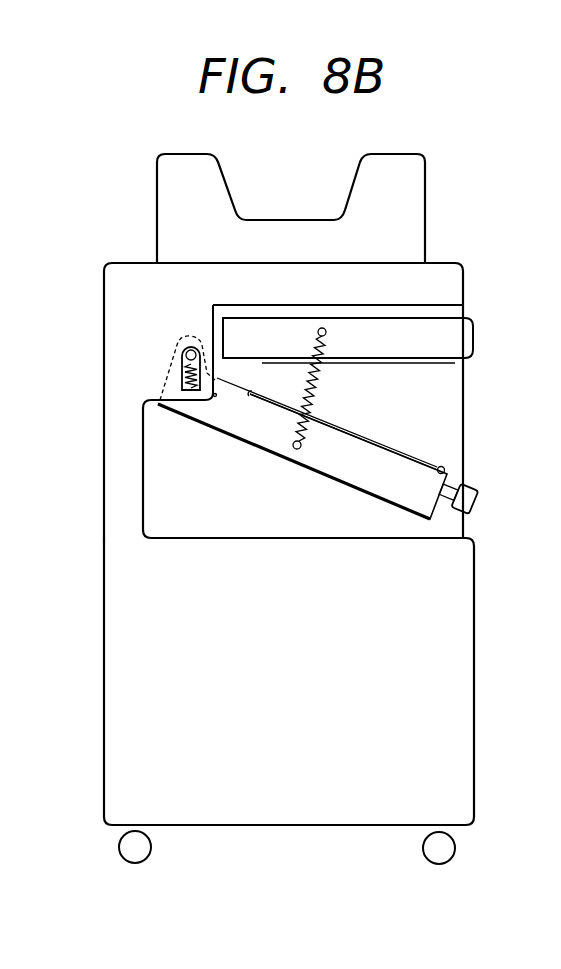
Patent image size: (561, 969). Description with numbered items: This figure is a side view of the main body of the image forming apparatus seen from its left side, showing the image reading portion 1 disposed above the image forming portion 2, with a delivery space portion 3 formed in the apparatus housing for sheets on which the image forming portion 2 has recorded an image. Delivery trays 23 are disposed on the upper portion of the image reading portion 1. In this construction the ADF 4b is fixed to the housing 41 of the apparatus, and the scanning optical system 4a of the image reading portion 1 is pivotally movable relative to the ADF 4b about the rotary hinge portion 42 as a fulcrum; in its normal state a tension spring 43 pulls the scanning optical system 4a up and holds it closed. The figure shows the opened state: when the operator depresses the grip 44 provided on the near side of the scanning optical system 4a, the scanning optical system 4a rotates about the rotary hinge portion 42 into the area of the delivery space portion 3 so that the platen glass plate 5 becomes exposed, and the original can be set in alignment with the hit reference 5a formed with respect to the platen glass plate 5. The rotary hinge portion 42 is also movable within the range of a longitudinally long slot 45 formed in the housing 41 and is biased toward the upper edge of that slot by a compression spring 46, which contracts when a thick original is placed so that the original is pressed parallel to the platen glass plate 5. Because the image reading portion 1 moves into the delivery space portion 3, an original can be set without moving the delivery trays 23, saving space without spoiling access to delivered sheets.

The image reading portion 1 is at (207, 415).
The image forming portion 2 is at (462, 642).
The delivery space portion 3 is at (165, 515).
The scanning optical system 4a is at (332, 468).
The ADF 4b is at (463, 330).
The platen glass plate 5 is at (413, 457).
The hit reference 5a is at (445, 470).
The delivery trays 23 is at (412, 172).
The housing 41 is at (118, 343).
The rotary hinge portion 42 is at (188, 357).
The tension spring 43 is at (327, 356).
The grip 44 is at (465, 500).
The longitudinally long slot 45 is at (183, 380).
The compression spring 46 is at (213, 395).